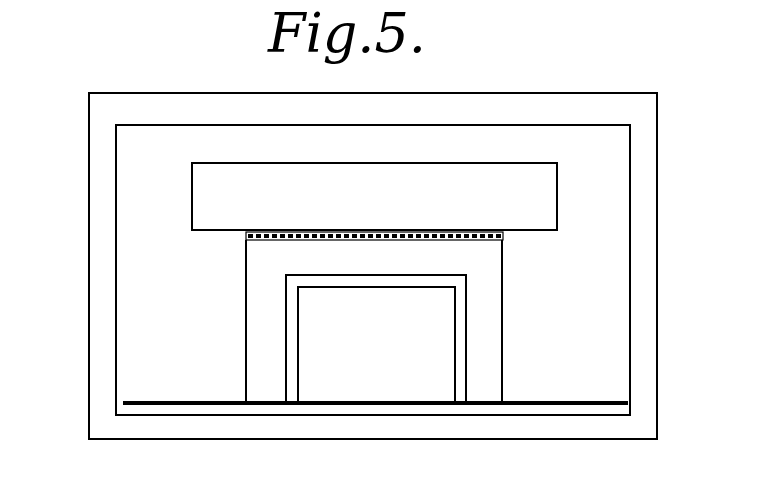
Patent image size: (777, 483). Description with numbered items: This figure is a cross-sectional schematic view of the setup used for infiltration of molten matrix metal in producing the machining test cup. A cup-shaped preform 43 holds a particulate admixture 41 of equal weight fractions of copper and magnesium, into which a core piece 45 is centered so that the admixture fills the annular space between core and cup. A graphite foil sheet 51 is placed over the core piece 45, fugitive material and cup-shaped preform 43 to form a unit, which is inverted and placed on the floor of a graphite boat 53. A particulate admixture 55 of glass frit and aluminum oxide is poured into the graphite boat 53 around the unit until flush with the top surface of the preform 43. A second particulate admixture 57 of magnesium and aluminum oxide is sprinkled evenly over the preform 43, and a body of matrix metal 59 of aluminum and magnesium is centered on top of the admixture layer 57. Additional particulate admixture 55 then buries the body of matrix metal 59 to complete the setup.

The admixture 41 is at (290, 347).
The cup-shaped preform 43 is at (258, 305).
The core piece 45 is at (318, 383).
The graphite foil sheet 51 is at (597, 402).
The graphite boat 53 is at (103, 405).
The particulate admixture 55 is at (575, 275).
The particulate admixture 57 is at (248, 238).
The body of matrix metal 59 is at (533, 205).